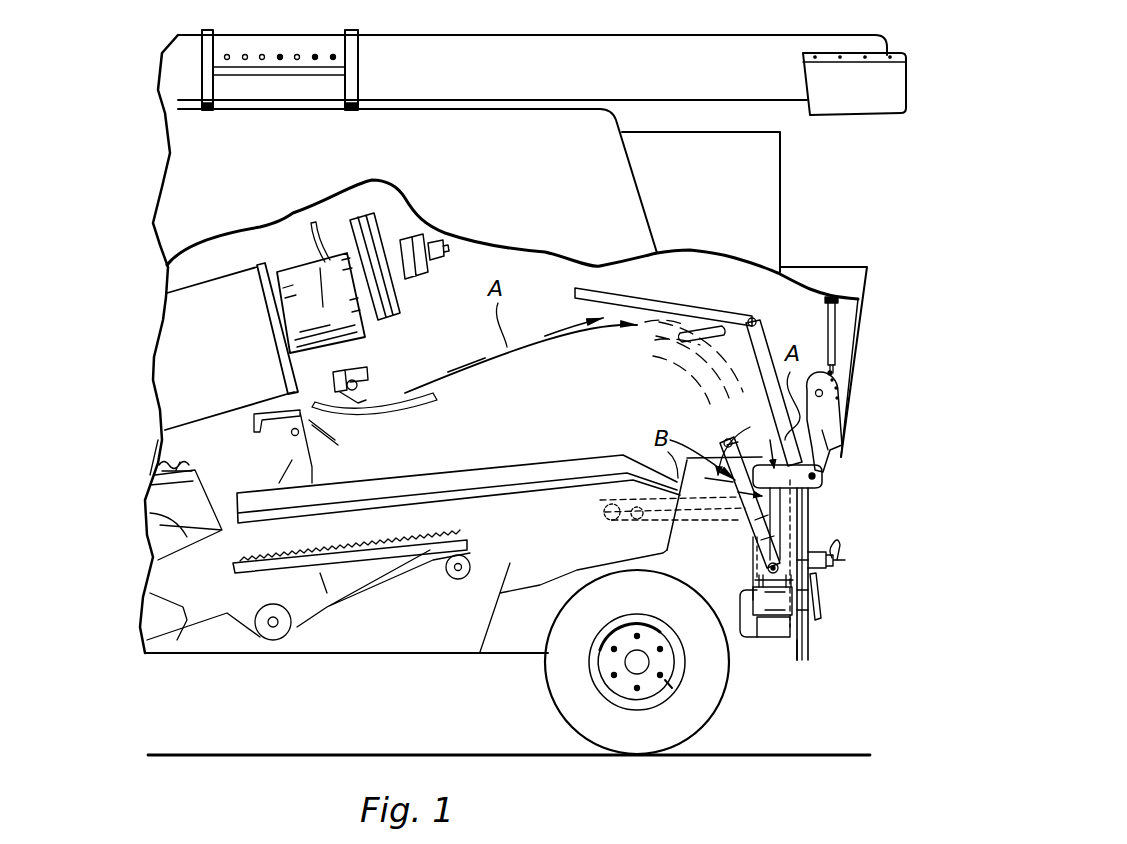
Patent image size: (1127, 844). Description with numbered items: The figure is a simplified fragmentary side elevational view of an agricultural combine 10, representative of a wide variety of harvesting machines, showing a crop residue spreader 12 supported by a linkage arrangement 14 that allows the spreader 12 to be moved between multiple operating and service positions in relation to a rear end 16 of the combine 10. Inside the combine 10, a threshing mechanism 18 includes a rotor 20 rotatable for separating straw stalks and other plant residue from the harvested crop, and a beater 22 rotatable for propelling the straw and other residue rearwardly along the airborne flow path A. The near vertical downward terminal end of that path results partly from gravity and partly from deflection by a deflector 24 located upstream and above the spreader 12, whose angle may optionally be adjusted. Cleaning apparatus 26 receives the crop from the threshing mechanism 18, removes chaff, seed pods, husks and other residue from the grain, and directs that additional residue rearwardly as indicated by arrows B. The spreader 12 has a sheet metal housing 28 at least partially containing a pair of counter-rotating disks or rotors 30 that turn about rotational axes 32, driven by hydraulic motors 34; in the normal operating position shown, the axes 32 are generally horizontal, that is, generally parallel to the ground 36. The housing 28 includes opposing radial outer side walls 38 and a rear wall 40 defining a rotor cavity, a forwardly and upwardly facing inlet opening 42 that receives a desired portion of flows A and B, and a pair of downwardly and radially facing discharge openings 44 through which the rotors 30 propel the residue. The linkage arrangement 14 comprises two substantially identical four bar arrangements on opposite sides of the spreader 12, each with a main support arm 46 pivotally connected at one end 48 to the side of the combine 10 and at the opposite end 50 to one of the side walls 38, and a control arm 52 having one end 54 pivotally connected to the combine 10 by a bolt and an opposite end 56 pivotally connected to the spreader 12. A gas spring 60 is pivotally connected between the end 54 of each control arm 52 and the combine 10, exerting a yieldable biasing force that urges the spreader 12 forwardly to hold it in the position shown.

The agricultural combine 10 is at (983, 653).
The crop residue spreader 12 is at (798, 655).
The linkage arrangement 14 is at (848, 456).
The rear end 16 is at (860, 338).
The threshing mechanism 18 is at (222, 271).
The rotor 20 is at (187, 289).
The beater 22 is at (378, 367).
The deflector 24 is at (795, 300).
The cleaning apparatus 26 is at (478, 465).
The housing 28 is at (782, 525).
The disks or rotors 30 is at (760, 637).
The rotational axes 32 is at (830, 567).
The hydraulic motors 34 is at (820, 590).
The ground 36 is at (845, 753).
The radial outer side walls 38 is at (787, 510).
The rear wall 40 is at (849, 631).
The inlet opening 42 is at (772, 424).
The discharge openings 44 is at (790, 627).
The main support arm 46 is at (681, 503).
The end 48 is at (737, 437).
The opposite end 50 is at (760, 570).
The control arm 52 is at (843, 415).
The end 54 is at (837, 385).
The opposite end 56 is at (823, 480).
The gas spring 60 is at (837, 320).